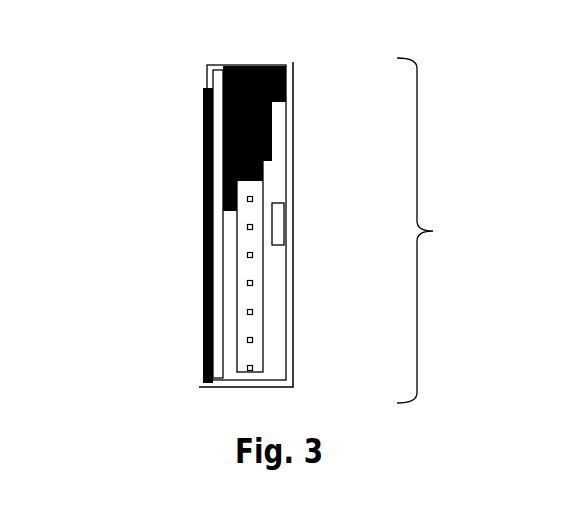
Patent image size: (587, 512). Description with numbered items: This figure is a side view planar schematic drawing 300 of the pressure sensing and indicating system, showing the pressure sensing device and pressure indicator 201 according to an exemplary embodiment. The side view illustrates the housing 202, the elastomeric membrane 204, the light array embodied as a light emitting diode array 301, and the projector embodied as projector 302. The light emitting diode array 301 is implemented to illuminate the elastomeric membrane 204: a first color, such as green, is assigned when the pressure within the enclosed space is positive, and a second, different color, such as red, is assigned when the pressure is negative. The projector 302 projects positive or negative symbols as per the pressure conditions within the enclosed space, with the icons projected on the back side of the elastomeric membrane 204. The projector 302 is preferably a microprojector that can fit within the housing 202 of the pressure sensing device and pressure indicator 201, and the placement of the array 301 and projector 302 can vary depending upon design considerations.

The server rack assembly 300 is at (120, 57).
The pressure sensing device and pressure indicator 201 is at (450, 230).
The housing 202 is at (288, 347).
The elastomeric membrane 204 is at (198, 207).
The light emitting diode array 301 is at (261, 150).
The projector 302 is at (277, 228).